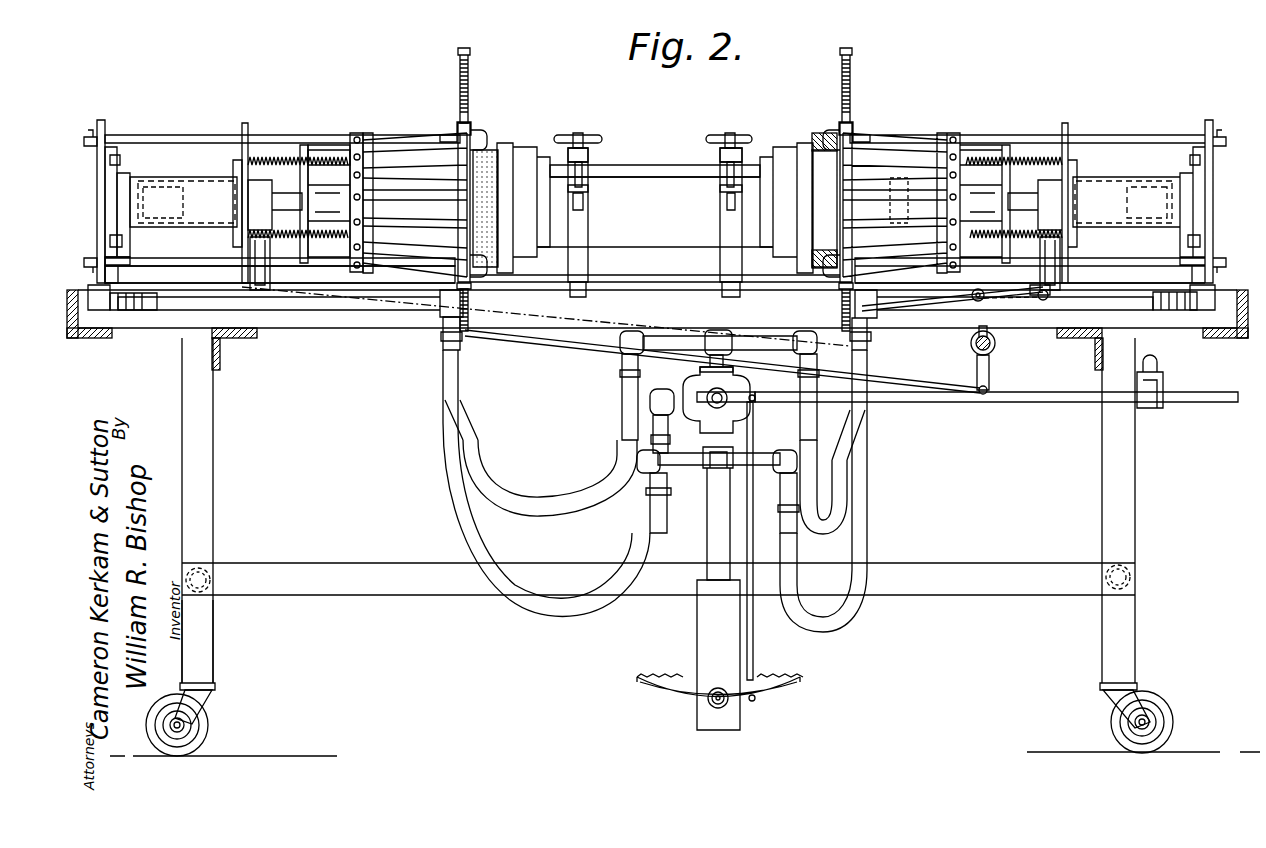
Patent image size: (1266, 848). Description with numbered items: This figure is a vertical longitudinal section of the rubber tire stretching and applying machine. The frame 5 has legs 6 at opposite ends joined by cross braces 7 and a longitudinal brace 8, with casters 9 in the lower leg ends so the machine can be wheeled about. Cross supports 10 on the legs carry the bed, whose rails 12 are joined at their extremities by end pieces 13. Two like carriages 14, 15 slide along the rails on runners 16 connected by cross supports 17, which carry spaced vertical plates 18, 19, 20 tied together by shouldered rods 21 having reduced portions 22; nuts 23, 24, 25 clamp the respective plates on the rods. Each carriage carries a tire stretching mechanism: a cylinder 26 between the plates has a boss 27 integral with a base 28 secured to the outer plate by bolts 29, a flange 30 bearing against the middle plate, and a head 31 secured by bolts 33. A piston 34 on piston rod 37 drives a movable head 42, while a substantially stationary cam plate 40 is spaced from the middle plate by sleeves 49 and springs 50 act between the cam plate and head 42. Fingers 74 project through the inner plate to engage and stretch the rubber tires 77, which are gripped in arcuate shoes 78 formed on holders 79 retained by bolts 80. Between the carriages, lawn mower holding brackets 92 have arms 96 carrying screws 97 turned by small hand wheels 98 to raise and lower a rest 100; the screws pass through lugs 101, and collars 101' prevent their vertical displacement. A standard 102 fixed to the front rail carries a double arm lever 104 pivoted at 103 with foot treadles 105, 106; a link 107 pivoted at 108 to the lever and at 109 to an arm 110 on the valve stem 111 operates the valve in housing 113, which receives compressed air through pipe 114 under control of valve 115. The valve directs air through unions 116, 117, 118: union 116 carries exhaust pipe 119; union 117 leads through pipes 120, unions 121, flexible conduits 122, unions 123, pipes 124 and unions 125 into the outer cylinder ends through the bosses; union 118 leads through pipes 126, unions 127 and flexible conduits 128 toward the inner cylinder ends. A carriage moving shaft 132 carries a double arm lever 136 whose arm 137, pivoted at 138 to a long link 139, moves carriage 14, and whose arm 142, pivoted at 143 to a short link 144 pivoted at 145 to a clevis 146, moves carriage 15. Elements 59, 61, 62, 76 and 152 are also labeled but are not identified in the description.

The frame 5 is at (240, 584).
The legs 6 is at (213, 660).
The cross braces 7 is at (212, 580).
The longitudinal brace 8 is at (308, 578).
The casters 9 is at (208, 725).
The cross supports 10 is at (246, 340).
The rails 12 is at (170, 338).
The end pieces 13 is at (80, 340).
The carriage 14 is at (280, 195).
The carriage 15 is at (1030, 190).
The runners 16 is at (395, 270).
The cross supports 17 is at (250, 272).
The vertical plate 18 is at (97, 178).
The vertical plate 19 is at (246, 123).
The vertical plate 20 is at (470, 128).
The rods 21 is at (144, 135).
The reduced portions 22 is at (318, 150).
The nuts 23 is at (88, 136).
The nuts 24 is at (262, 165).
The nuts 25 is at (450, 135).
The cylinder 26 is at (190, 177).
The boss 27 is at (130, 250).
The base 28 is at (112, 147).
The bolts 29 is at (121, 160).
The flange 30 is at (233, 242).
The head 31 is at (260, 180).
The bolts 33 is at (160, 180).
The piston 34 is at (651, 200).
The piston rod 37 is at (212, 177).
The cam plate 40 is at (304, 145).
The head 42 is at (356, 133).
The sleeves 49 is at (315, 221).
The springs 50 is at (619, 247).
The guide 59 is at (965, 200).
The adjusting screw 61 is at (468, 90).
The lower screw 62 is at (459, 80).
The fingers 74 is at (395, 165).
The cone hub 76 is at (368, 140).
The rubber tires 77 is at (815, 140).
The tire gripping shoes 78 is at (487, 138).
The holders 79 is at (472, 122).
The retainer bolts 80 is at (466, 50).
The lawn mower holding brackets 92 is at (588, 262).
The arms 96 is at (590, 152).
The screws 97 is at (585, 135).
The hand operated wheels 98 is at (576, 135).
The rest 100 is at (690, 178).
The lugs 101 is at (655, 189).
The collars 101' is at (654, 220).
The standard 102 is at (697, 615).
The pivot 103 is at (690, 705).
The double arm lever 104 is at (685, 690).
The foot treadle 105 is at (790, 677).
The foot treadle 106 is at (640, 677).
The link 107 is at (753, 630).
The pivotal connection 108 is at (755, 700).
The pivotal connection 109 is at (755, 402).
The arm 110 is at (727, 395).
The stem 111 is at (660, 425).
The valve housing 113 is at (700, 375).
The pipe 114 is at (1082, 402).
The valve 115 is at (1163, 375).
The pipe union 116 is at (650, 400).
The pipe union 117 is at (718, 468).
The pipe union 118 is at (720, 331).
The air exhaust pipe 119 is at (655, 495).
The pipes 120 is at (763, 453).
The unions 121 is at (635, 460).
The flexible conduits 122 is at (480, 555).
The pipe unions 123 is at (441, 338).
The pipes 124 is at (222, 310).
The pipe unions 125 is at (140, 312).
The pipes 126 is at (665, 328).
The unions 127 is at (716, 331).
The flexible conduits 128 is at (490, 492).
The carriage moving shaft 132 is at (995, 345).
The double arm lever 136 is at (977, 362).
The arm 137 is at (989, 372).
The pivotal connection 138 is at (983, 395).
The long link 139 is at (575, 340).
The arm 142 is at (975, 312).
The pivotal connection 143 is at (972, 295).
The short link 144 is at (1040, 287).
The pivotal connection 145 is at (1018, 300).
The clevis 146 is at (1046, 300).
The shaft 152 is at (650, 153).